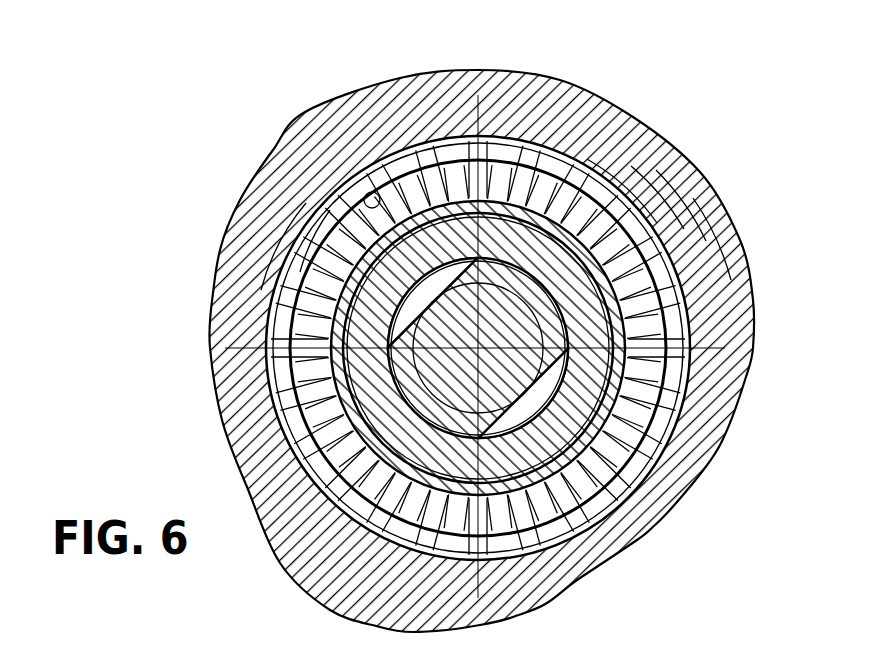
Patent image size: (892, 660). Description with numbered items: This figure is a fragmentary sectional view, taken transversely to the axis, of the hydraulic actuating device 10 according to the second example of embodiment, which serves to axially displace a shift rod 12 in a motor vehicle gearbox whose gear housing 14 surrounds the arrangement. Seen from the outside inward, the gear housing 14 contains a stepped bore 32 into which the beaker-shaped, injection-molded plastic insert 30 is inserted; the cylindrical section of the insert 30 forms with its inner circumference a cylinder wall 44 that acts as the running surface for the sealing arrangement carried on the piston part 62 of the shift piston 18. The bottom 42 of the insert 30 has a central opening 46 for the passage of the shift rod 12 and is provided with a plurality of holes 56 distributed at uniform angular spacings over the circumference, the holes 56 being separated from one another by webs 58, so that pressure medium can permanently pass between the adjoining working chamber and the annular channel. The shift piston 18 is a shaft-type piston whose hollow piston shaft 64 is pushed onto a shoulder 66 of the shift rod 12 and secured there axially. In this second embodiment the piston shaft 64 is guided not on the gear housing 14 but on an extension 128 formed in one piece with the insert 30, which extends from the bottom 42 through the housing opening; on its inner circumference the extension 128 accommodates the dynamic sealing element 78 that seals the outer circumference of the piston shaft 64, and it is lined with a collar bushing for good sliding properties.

The hydraulic actuating device 10 is at (459, 125).
The shift rod 12 is at (683, 494).
The gear housing 14 is at (245, 228).
The shift piston 18 is at (715, 444).
The insert 30 is at (645, 305).
The stepped bore 32 is at (690, 320).
The bottom 42 is at (570, 160).
The cylinder wall 44 is at (533, 168).
The central opening 46 is at (640, 200).
The holes 56 is at (362, 168).
The webs 58 is at (347, 168).
The piston part 62 is at (290, 225).
The piston shaft 64 is at (673, 210).
The shoulder 66 is at (700, 228).
The sealing element 78 is at (720, 260).
The extension 128 is at (300, 275).